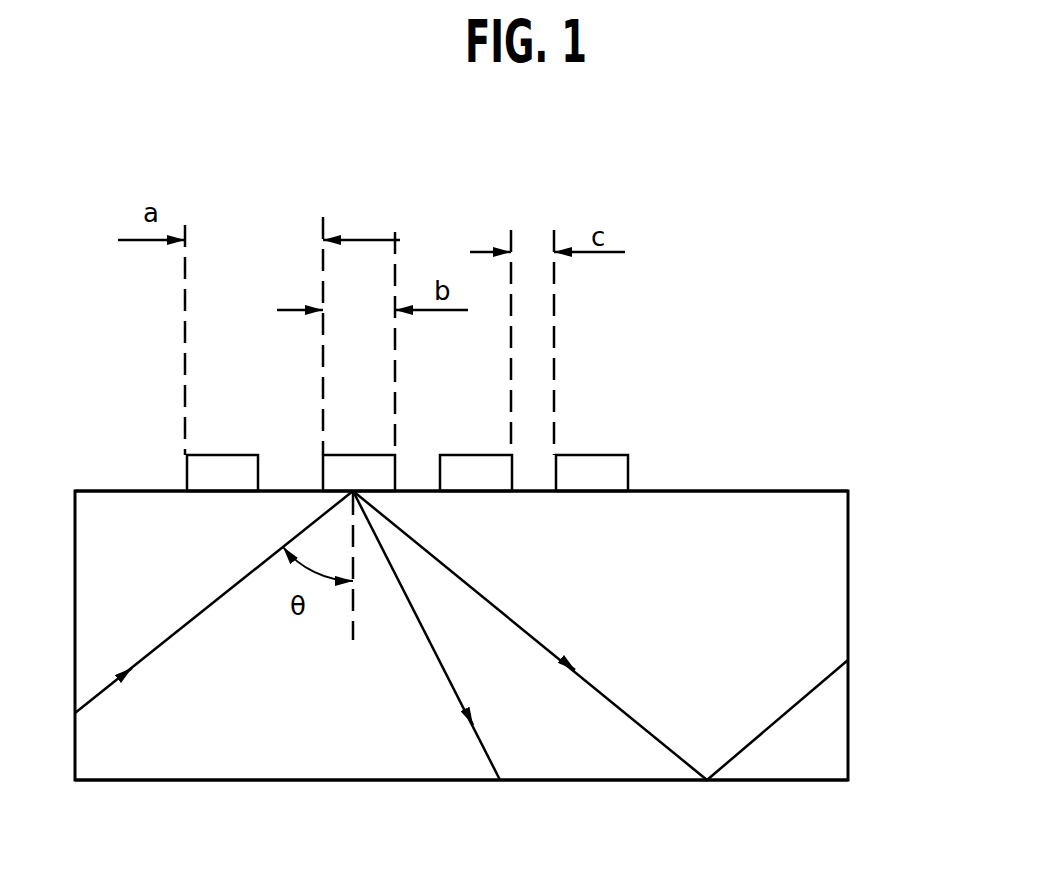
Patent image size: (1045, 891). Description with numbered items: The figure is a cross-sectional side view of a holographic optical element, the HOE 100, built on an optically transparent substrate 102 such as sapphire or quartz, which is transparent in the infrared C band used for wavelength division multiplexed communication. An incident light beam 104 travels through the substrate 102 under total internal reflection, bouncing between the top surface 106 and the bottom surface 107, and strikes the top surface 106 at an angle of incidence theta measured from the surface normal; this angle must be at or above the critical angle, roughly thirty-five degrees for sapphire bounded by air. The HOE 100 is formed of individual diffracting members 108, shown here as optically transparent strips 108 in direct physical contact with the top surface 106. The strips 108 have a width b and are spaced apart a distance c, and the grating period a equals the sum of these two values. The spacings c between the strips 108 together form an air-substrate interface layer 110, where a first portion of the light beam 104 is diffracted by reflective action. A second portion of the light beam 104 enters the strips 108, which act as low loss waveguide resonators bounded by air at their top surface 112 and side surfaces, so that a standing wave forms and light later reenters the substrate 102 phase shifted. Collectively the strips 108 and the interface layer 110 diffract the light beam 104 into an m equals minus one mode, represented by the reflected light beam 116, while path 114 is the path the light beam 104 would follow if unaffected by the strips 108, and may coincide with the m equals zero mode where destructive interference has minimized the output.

The HOE 100 is at (740, 380).
The substrate 102 is at (717, 772).
The incident light beam 104 is at (97, 700).
The top surface 106 is at (820, 489).
The bottom surface 107 is at (798, 782).
The diffracting members 108 is at (187, 477).
The interface layer 110 is at (287, 497).
The top surface 112 is at (200, 455).
The path 114 is at (632, 718).
The light beam 116 is at (497, 763).